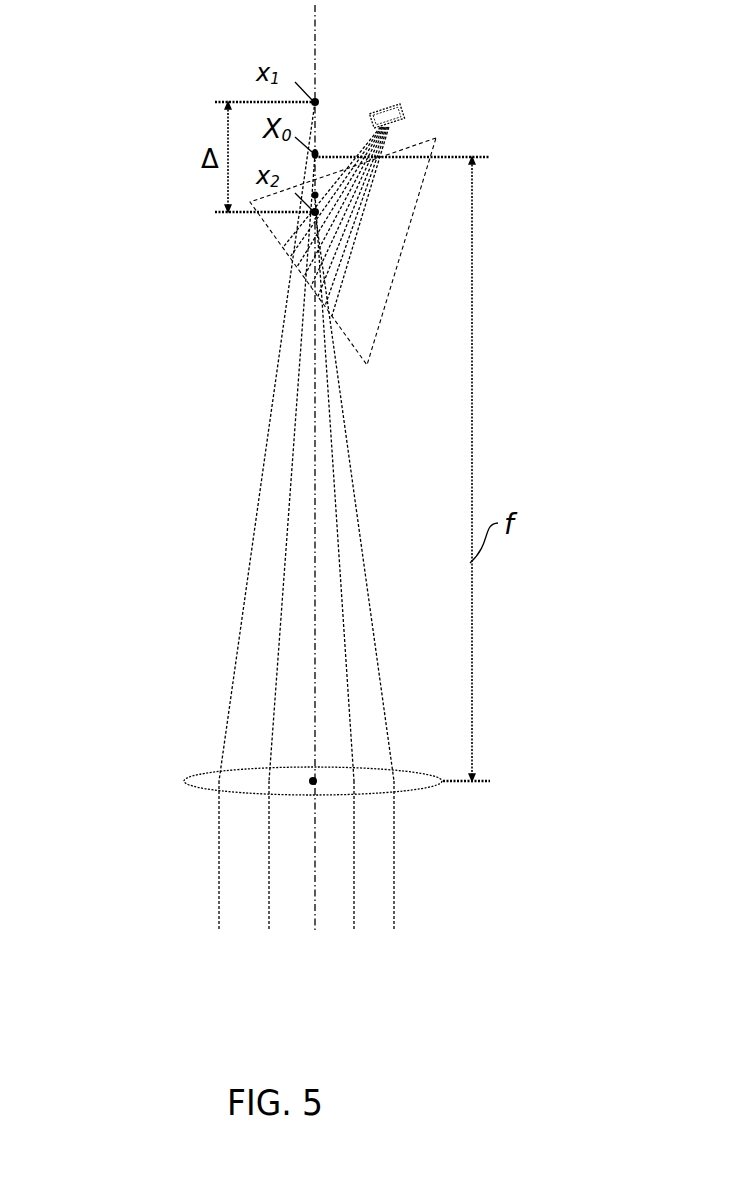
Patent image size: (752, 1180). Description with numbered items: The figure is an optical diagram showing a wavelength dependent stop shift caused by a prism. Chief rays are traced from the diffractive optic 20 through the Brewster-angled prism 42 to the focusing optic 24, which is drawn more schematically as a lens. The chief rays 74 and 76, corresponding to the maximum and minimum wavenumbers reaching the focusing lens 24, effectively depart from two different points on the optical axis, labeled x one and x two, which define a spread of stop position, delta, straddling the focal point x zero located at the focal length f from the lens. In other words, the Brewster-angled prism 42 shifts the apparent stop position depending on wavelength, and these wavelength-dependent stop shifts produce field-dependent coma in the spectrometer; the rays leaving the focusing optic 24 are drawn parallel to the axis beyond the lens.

The diffractive optic 20 is at (388, 118).
The Brewster-angled prism 42 is at (390, 277).
The chief ray 74 is at (247, 576).
The chief ray 76 is at (348, 490).
The focusing optic 24 is at (183, 780).